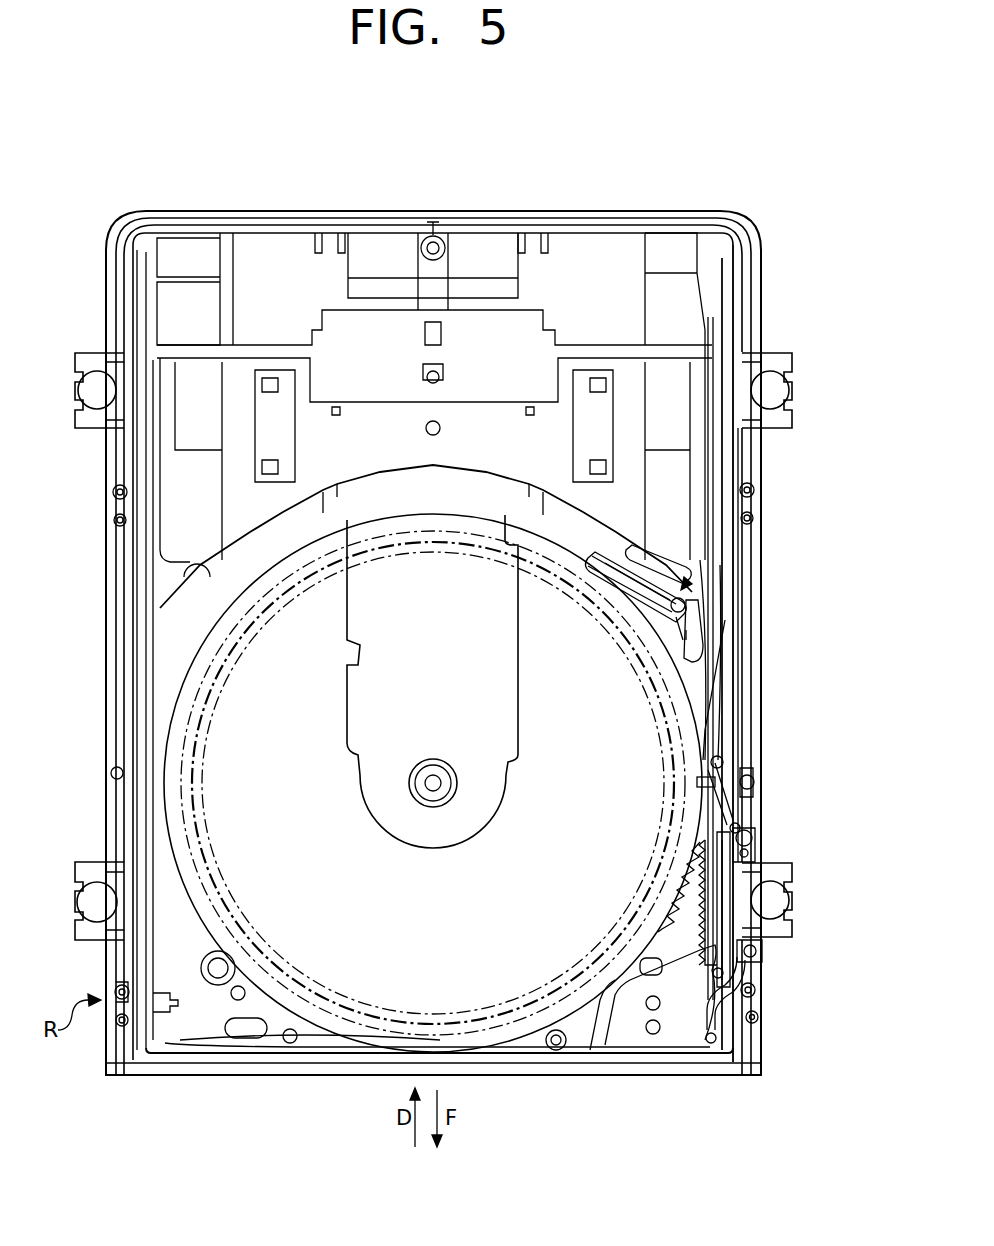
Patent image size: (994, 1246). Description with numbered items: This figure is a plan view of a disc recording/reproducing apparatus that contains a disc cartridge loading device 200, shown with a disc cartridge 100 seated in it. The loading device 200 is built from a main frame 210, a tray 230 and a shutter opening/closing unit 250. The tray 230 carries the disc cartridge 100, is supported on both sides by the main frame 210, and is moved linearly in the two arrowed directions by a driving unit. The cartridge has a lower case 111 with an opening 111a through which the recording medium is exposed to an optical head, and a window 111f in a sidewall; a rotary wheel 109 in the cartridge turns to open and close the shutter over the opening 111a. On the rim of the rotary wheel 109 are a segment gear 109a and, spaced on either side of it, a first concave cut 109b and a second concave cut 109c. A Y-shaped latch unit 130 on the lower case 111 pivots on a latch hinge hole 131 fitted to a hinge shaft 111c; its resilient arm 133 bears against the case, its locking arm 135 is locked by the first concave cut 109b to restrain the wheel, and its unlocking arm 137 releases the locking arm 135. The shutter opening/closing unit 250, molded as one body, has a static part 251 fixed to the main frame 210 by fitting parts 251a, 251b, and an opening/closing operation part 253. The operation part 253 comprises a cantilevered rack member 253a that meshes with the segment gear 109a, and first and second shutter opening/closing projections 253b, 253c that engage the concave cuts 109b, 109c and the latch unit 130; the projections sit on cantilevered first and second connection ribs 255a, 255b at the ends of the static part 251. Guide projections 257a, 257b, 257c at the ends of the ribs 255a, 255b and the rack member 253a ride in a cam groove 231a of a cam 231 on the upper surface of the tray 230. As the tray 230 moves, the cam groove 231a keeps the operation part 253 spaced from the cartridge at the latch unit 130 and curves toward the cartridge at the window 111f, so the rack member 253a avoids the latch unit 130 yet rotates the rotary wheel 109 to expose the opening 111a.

The disc cartridge 100 is at (183, 1050).
The rotary wheel 109 is at (557, 1052).
The segment gear 109a is at (640, 1000).
The first concave cut 109b is at (590, 1010).
The second concave cut 109c is at (696, 782).
The lower case 111 is at (258, 1038).
The opening 111a is at (355, 643).
The hinge shaft 111c is at (673, 603).
The window 111f is at (733, 828).
The latch unit 130 is at (690, 582).
The latch hinge hole 131 is at (700, 592).
The resilient arm 133 is at (655, 553).
The locking arm 135 is at (630, 587).
The unlocking arm 137 is at (688, 628).
The disc cartridge loading device 200 is at (768, 724).
The main frame 210 is at (112, 722).
The tray 230 is at (140, 822).
The cam 231 is at (735, 648).
The cam groove 231a is at (728, 662).
The shutter opening/closing unit 250 is at (758, 870).
The static part 251 is at (752, 907).
The first fitting part 251a is at (753, 950).
The second fitting part 251b is at (757, 836).
The opening/closing operation part 253 is at (598, 785).
The rack member 253a is at (707, 893).
The first shutter opening/closing projection 253b is at (697, 980).
The second shutter opening/closing projection 253c is at (693, 785).
The first connection rib 255a is at (758, 1017).
The second connection rib 255b is at (754, 782).
The first guide projection 257a is at (733, 1035).
The second guide projection 257b is at (755, 991).
The third guide projection 257c is at (723, 761).